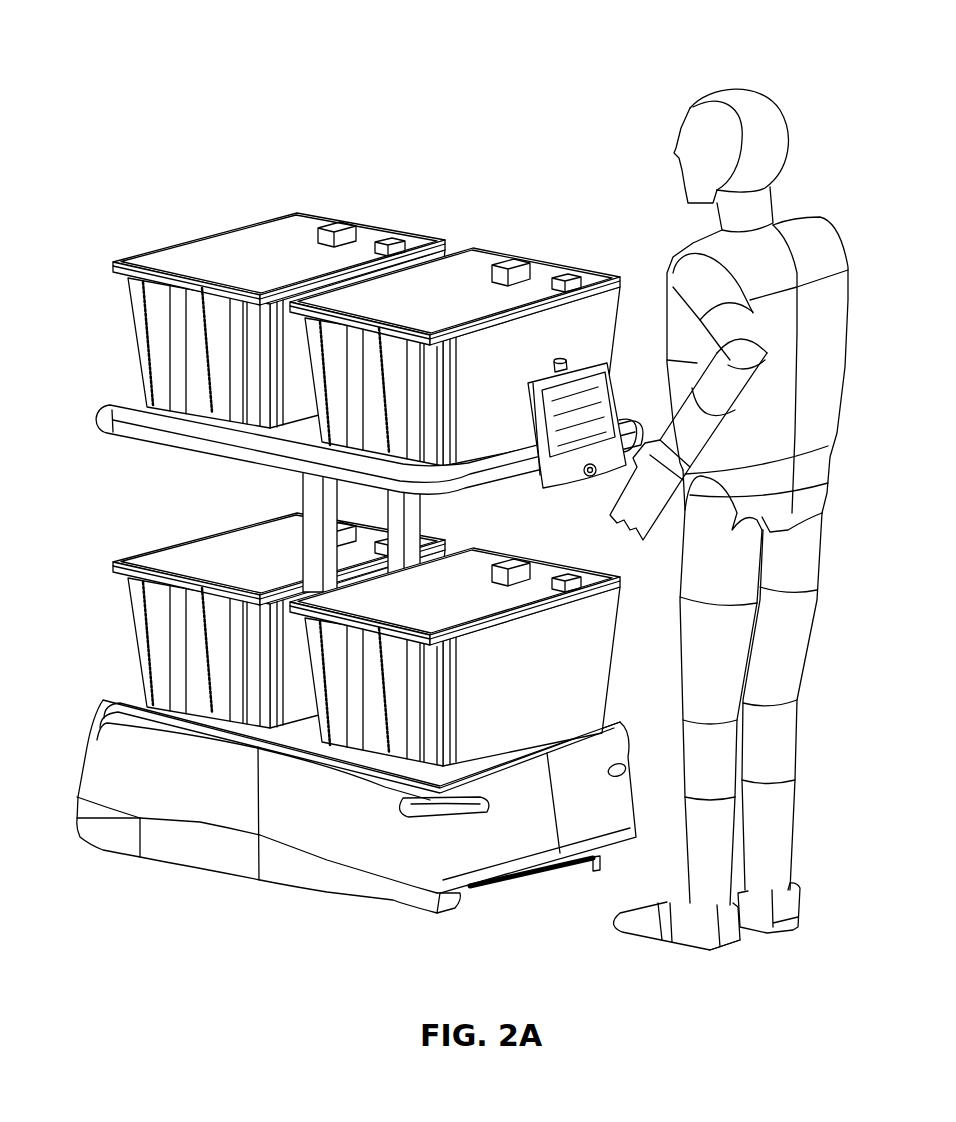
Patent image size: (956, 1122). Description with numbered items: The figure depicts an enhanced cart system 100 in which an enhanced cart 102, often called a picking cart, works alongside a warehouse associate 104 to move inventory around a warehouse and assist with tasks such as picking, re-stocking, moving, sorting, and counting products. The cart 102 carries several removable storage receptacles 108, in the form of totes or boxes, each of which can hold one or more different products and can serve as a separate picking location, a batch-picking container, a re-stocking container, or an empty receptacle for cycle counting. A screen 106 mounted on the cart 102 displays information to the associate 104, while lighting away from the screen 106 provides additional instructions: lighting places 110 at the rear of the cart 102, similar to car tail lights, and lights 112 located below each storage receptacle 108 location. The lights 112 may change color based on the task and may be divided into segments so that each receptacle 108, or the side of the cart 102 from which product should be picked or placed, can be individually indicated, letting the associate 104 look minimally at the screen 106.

The enhanced cart system 100 is at (178, 58).
The enhanced cart 102 is at (244, 800).
The warehouse associate 104 is at (665, 210).
The screen 106 is at (562, 472).
The storage receptacle 108 is at (162, 252).
The lighting places 110 is at (418, 808).
The lights below each storage receptacle location 112 is at (132, 398).